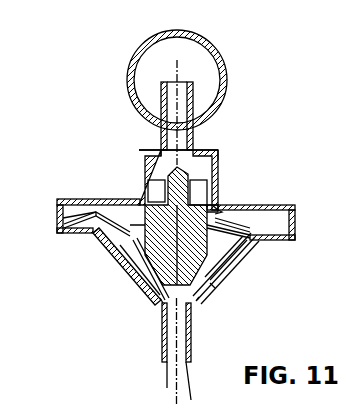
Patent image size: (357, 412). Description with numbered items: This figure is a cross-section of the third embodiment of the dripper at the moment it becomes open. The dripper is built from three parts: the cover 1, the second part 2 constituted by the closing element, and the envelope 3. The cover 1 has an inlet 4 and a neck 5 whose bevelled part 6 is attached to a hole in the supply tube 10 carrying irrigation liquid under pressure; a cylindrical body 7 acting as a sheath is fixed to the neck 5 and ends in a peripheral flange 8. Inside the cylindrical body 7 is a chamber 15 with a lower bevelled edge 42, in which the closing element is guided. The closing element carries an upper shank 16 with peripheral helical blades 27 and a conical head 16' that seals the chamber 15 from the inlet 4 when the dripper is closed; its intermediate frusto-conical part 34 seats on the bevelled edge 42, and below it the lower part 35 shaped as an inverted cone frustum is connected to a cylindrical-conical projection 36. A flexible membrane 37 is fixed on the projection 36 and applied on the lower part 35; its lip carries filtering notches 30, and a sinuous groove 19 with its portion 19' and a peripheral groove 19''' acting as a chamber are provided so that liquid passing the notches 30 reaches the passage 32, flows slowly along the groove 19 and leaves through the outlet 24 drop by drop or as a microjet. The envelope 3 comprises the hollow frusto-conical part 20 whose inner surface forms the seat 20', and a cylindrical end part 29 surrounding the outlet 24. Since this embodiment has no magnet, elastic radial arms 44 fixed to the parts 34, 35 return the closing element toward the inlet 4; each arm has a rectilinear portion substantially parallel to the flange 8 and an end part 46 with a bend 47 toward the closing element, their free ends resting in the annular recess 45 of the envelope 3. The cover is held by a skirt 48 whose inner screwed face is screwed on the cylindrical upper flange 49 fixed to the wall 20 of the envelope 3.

The cover 1 is at (222, 166).
The closing element part 2 is at (233, 296).
The envelope 3 is at (116, 279).
The inlet 4 is at (178, 84).
The neck 5 is at (196, 133).
The bevelled part 6 is at (195, 107).
The cylindrical body 7 is at (219, 153).
The peripheral flange 8 is at (268, 205).
The supply tube 10 is at (224, 77).
The chamber 15 is at (220, 150).
The upper shank 16 is at (159, 211).
The conical head 16' is at (139, 135).
The sinuous groove 19 is at (131, 293).
The inner skirt wall 19' is at (148, 277).
The peripheral groove 19''' is at (269, 260).
The frusto-conical part 20 is at (209, 309).
The seat 20' is at (221, 295).
The outlet 24 is at (168, 360).
The helical blades 27 is at (208, 188).
The cylindrical end part 29 is at (192, 340).
The notches 30 is at (240, 243).
The passage 32 is at (222, 281).
The intermediate frusto-conical part 34 is at (137, 214).
The lower part 35 is at (226, 262).
The cylindrical-conical projection 36 is at (162, 303).
The membrane 37 is at (150, 268).
The lower bevelled edge 42 is at (220, 212).
The elastic radial arms 44 is at (110, 220).
The annular recess 45 is at (62, 212).
The end part 46 is at (80, 214).
The bend 47 is at (95, 210).
The skirt 48 is at (60, 230).
The cylindrical upper flange 49 is at (72, 233).